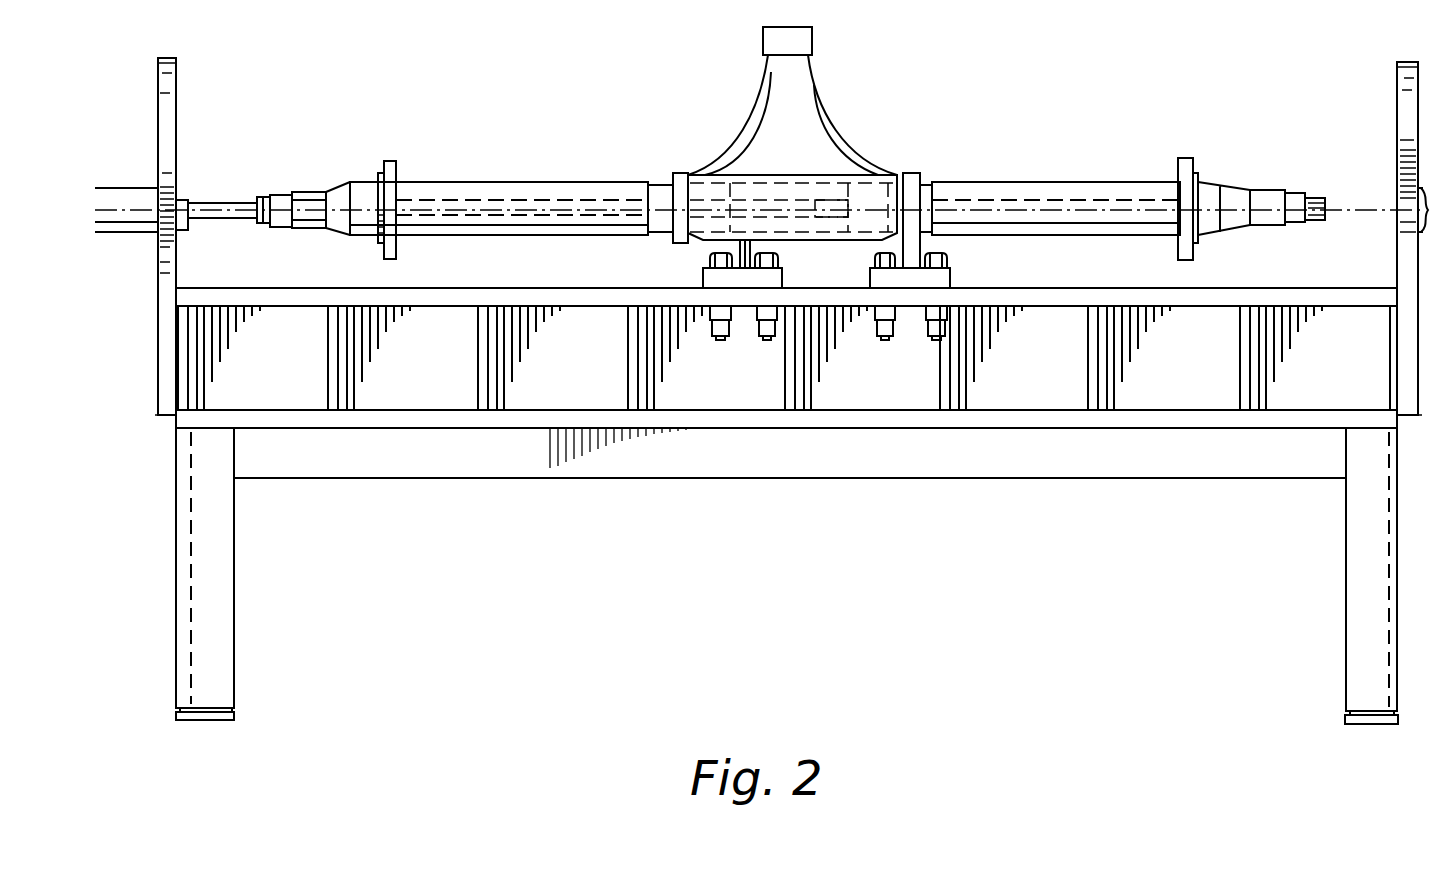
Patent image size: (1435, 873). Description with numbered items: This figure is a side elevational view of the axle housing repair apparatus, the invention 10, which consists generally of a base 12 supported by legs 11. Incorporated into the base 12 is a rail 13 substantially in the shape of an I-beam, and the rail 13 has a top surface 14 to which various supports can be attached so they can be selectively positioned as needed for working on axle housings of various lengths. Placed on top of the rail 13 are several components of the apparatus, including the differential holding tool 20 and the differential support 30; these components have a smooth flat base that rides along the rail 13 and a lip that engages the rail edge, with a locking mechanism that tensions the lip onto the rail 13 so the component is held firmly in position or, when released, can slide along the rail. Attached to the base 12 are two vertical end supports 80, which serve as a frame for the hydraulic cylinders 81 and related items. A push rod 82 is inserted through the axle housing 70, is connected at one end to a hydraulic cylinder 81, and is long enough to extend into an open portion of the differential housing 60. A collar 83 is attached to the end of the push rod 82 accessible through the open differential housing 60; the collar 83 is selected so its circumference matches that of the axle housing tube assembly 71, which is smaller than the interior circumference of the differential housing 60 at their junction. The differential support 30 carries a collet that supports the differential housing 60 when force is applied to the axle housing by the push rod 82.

The invention 10 is at (148, 347).
The legs 11 is at (178, 612).
The base 12 is at (1222, 462).
The rail 13 is at (1300, 318).
The top surface 14 is at (1300, 288).
The differential holding tool 20 is at (740, 247).
The differential support 30 is at (912, 173).
The differential housing 60 is at (833, 113).
The axle housing 70 is at (348, 182).
The axle housing tube assembly 71 is at (1093, 182).
The vertical end supports 80 is at (180, 100).
The hydraulic cylinder 81 is at (113, 187).
The push rod 82 is at (230, 200).
The collar 83 is at (832, 187).